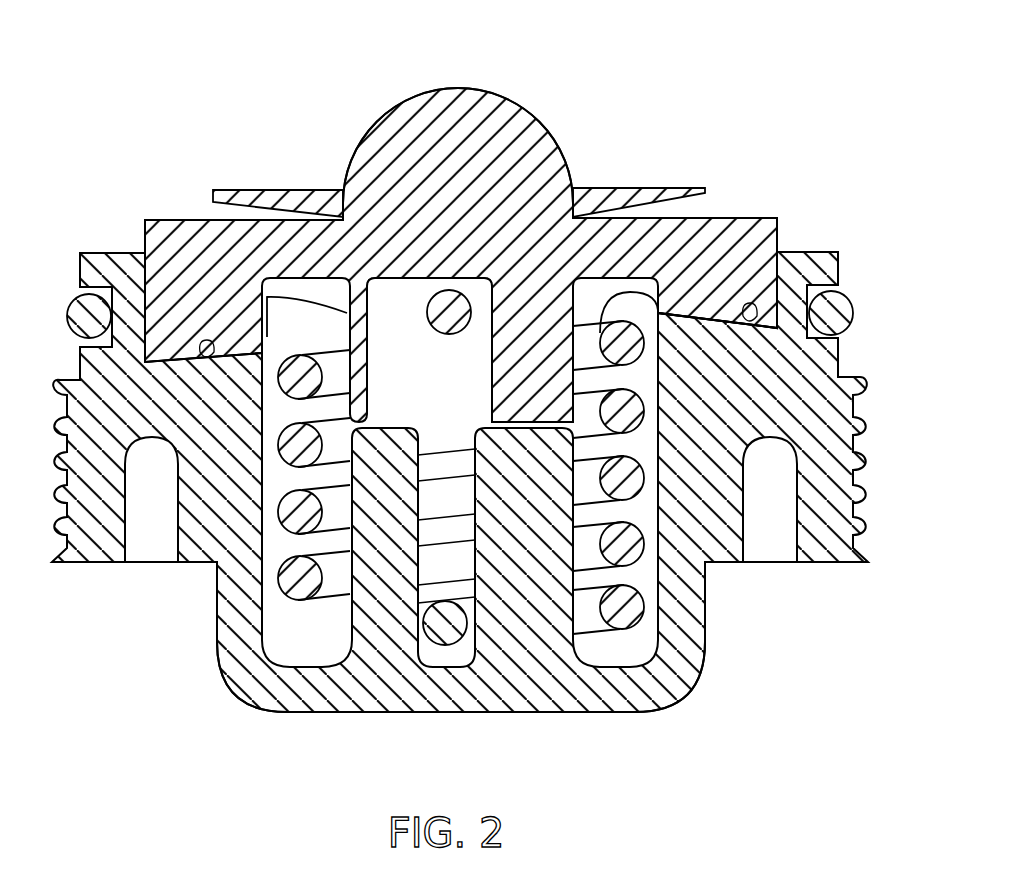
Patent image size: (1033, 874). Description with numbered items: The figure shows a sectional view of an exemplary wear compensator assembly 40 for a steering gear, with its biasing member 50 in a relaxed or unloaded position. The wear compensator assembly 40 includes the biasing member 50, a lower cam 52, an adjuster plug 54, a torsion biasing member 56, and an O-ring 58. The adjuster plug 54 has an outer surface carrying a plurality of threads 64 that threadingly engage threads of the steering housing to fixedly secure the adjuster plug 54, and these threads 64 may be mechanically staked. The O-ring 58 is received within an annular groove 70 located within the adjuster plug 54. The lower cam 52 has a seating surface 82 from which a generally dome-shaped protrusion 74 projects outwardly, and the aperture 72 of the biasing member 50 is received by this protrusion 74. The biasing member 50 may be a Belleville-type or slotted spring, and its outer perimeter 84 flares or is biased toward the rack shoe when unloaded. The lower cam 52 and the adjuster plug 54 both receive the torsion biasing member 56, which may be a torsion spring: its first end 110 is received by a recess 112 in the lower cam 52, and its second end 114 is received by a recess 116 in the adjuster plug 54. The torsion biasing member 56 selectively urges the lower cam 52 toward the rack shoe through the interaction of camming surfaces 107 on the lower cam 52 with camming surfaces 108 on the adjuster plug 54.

The wear compensator assembly 40 is at (690, 64).
The biasing member 50 is at (600, 188).
The lower cam 52 is at (192, 236).
The adjuster plug 54 is at (528, 615).
The torsion biasing member 56 is at (340, 573).
The O-ring 58 is at (842, 307).
The threads 64 is at (864, 410).
The annular groove 70 is at (836, 292).
The aperture 72 is at (572, 200).
The dome-shaped protrusion 74 is at (470, 88).
The seating surface 82 is at (165, 219).
The outer perimeter 84 is at (215, 192).
The camming surfaces 107 is at (165, 372).
The camming surfaces 108 is at (207, 355).
The first end 110 is at (452, 320).
The recess 112 is at (413, 384).
The second end 114 is at (445, 630).
The recess 116 is at (427, 597).